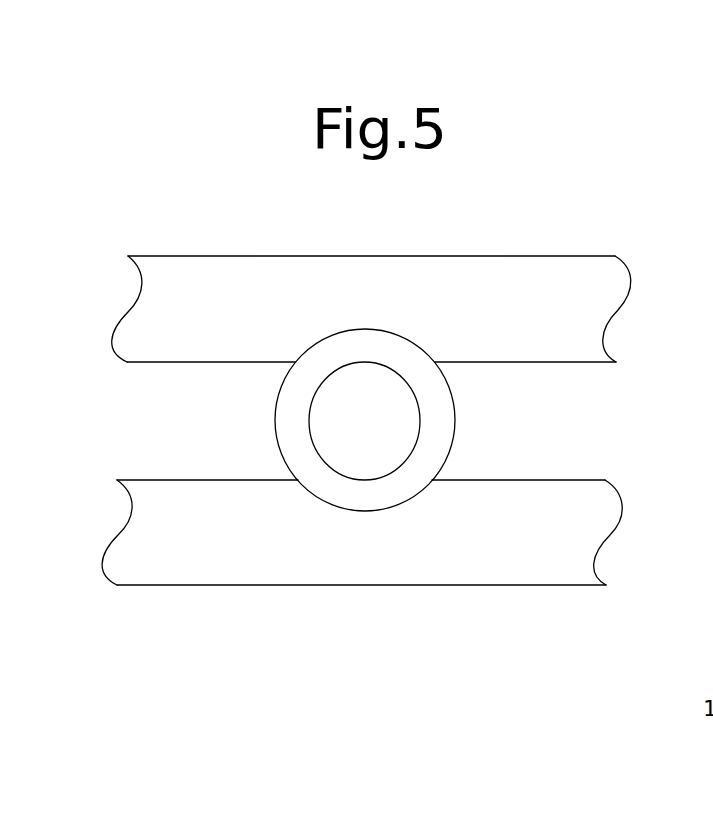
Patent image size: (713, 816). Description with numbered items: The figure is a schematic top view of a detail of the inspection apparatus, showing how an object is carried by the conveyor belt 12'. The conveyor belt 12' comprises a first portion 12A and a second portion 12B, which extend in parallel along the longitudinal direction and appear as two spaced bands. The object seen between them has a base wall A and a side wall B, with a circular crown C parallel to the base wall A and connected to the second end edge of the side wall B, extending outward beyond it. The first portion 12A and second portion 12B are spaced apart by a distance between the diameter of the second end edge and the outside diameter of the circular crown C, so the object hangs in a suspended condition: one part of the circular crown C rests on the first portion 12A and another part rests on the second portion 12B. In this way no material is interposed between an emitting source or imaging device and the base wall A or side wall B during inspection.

The conveyor belt 12' is at (406, 426).
The first portion 12A is at (514, 555).
The second portion 12B is at (495, 290).
The base wall A is at (394, 415).
The side wall B is at (435, 438).
The circular crown C is at (296, 420).